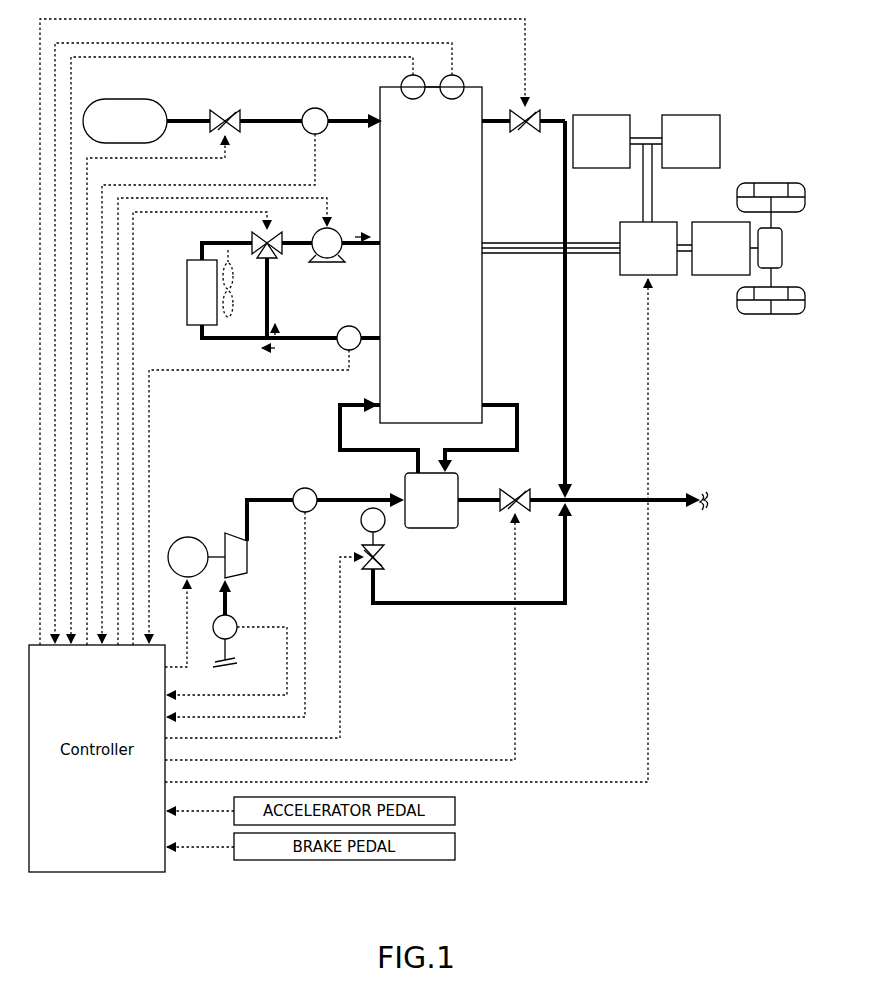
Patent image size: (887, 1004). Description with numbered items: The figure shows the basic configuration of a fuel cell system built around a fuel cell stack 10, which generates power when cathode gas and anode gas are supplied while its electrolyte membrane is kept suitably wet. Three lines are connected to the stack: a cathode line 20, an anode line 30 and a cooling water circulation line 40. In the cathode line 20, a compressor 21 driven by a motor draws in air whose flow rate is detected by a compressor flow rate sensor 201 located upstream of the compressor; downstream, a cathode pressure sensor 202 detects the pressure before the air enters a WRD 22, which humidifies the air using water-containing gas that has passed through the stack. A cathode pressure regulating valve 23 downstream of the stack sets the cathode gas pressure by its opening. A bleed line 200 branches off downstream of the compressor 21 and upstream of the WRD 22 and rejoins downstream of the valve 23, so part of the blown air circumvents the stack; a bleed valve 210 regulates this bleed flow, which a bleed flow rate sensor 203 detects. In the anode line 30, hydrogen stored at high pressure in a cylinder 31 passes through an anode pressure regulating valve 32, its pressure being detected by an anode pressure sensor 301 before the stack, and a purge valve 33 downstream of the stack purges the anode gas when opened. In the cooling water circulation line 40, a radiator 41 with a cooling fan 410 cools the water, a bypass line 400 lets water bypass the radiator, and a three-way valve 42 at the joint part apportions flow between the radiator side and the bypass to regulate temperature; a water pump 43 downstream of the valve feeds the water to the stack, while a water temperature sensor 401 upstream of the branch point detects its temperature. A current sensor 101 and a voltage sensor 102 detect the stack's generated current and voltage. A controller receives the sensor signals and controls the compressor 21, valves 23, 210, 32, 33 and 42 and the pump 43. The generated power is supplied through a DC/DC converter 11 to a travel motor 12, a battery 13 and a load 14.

The fuel cell stack 10 is at (486, 190).
The DC/DC converter 11 is at (630, 220).
The travel motor 12 is at (715, 220).
The battery 13 is at (608, 112).
The load 14 is at (702, 112).
The cathode line 20 is at (290, 500).
The compressor 21 is at (224, 532).
The WRD (Water Recovery Device) 22 is at (422, 530).
The cathode pressure regulating valve 23 is at (522, 486).
The anode line 30 is at (340, 132).
The cylinder 31 is at (130, 99).
The anode pressure regulating valve 32 is at (234, 98).
The purge valve 33 is at (512, 104).
The cooling water circulation line 40 is at (322, 351).
The radiator 41 is at (184, 299).
The three-way valve 42 is at (280, 252).
The water pump 43 is at (338, 232).
The current sensor 101 is at (462, 75).
The voltage sensor 102 is at (402, 83).
The bleed line 200 is at (537, 605).
The compressor flow rate sensor 201 is at (238, 618).
The cathode pressure sensor 202 is at (307, 488).
The bleed flow rate sensor 203 is at (360, 521).
The bleed valve 210 is at (368, 575).
The anode pressure sensor 301 is at (318, 106).
The bypass line 400 is at (272, 292).
The water temperature sensor 401 is at (354, 326).
The cooling fan 410 is at (230, 252).